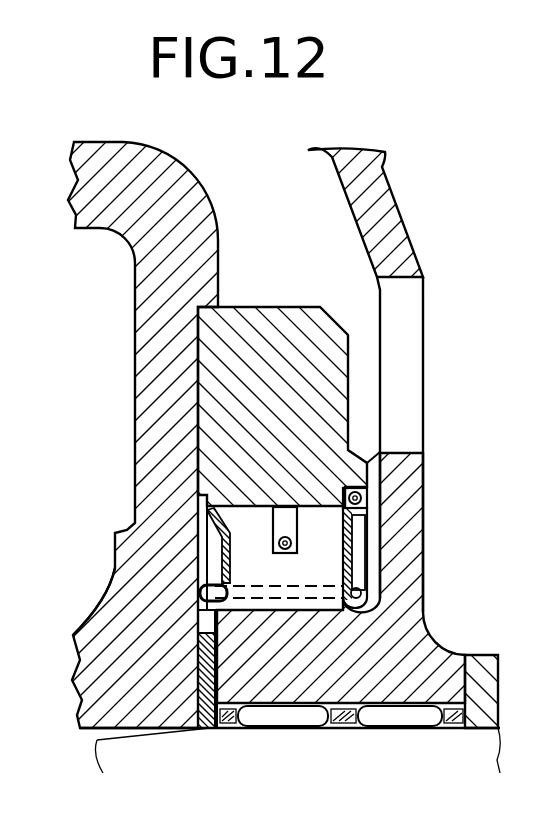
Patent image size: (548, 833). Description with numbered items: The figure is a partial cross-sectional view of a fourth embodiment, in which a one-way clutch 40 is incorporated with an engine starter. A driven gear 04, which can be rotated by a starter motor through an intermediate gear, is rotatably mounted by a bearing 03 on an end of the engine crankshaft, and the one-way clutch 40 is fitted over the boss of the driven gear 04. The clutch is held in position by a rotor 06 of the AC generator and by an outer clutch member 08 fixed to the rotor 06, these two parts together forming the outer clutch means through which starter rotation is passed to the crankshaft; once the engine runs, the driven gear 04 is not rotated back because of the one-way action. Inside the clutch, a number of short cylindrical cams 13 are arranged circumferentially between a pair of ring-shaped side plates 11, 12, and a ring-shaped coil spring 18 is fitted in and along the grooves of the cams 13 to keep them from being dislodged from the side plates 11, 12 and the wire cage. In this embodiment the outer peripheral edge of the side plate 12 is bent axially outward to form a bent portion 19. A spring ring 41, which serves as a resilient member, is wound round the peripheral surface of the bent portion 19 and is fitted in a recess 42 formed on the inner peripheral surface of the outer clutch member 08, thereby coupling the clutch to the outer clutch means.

The rotor 06 is at (100, 230).
The outer clutch member 08 is at (293, 310).
The driven gear 04 is at (408, 265).
The recess 42 is at (360, 478).
The spring ring 41 is at (345, 487).
The bent portion 19 is at (378, 512).
The one-way clutch 40 is at (374, 558).
The side plate 12 is at (350, 572).
The coil spring 18 is at (273, 543).
The cam 13 is at (247, 563).
The side plate 11 is at (100, 603).
The bearing 03 is at (293, 722).